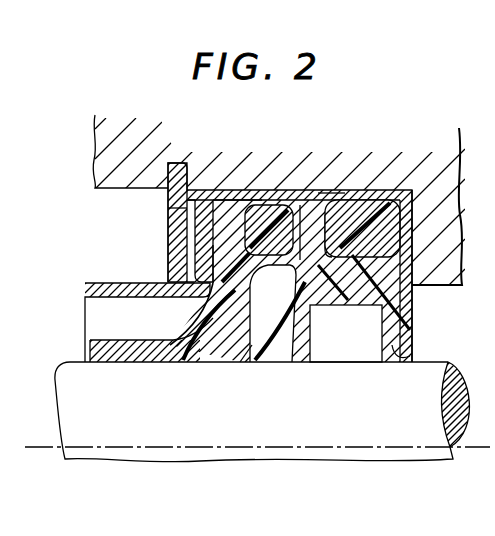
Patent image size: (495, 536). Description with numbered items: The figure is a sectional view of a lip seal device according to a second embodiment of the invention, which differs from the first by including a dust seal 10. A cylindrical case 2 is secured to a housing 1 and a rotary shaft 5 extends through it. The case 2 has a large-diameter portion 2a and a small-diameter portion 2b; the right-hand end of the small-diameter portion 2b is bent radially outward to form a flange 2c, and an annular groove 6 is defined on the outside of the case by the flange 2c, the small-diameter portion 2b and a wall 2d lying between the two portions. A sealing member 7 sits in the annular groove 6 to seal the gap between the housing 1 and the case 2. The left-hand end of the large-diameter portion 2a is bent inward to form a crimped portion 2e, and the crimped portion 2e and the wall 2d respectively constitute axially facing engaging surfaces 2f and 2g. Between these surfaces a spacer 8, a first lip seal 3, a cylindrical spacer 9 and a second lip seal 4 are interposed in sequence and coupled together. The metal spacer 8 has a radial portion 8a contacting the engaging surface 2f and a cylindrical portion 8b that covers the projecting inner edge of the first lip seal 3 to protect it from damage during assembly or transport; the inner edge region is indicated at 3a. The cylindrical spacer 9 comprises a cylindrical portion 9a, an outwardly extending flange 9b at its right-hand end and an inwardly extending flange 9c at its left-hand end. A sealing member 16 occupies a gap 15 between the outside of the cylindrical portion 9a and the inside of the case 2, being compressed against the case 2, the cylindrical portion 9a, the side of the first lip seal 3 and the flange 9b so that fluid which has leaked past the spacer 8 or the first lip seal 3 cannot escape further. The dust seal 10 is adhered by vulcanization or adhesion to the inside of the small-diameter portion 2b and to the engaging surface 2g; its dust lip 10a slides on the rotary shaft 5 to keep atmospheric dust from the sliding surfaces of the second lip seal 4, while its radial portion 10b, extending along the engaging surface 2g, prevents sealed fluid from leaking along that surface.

The housing 1 is at (95, 133).
The cylindrical case 2 is at (252, 188).
The large-diameter portion 2a is at (262, 198).
The small-diameter portion 2b is at (352, 292).
The flange 2c is at (424, 200).
The wall 2d is at (335, 202).
The crimped portion 2e is at (187, 222).
The engaging surface 2f is at (198, 192).
The engaging surface 2g is at (300, 212).
The first lip seal 3 is at (165, 355).
The sleeve end portion 3a is at (117, 360).
The second lip seal 4 is at (255, 362).
The rotary shaft 5 is at (429, 364).
The annular groove 6 is at (360, 205).
The sealing member 7 is at (382, 215).
The spacer 8 is at (207, 215).
The radial portion 8a is at (195, 248).
The cylindrical portion 8b is at (85, 292).
The cylindrical spacer 9 is at (277, 277).
The cylindrical portion 9a is at (253, 340).
The flange 9b is at (283, 215).
The flange 9c is at (228, 337).
The dust seal 10 is at (410, 305).
The dust lip 10a is at (399, 360).
The radial portion 10b is at (330, 190).
The gap 15 is at (212, 260).
The sealing member 16 is at (245, 200).